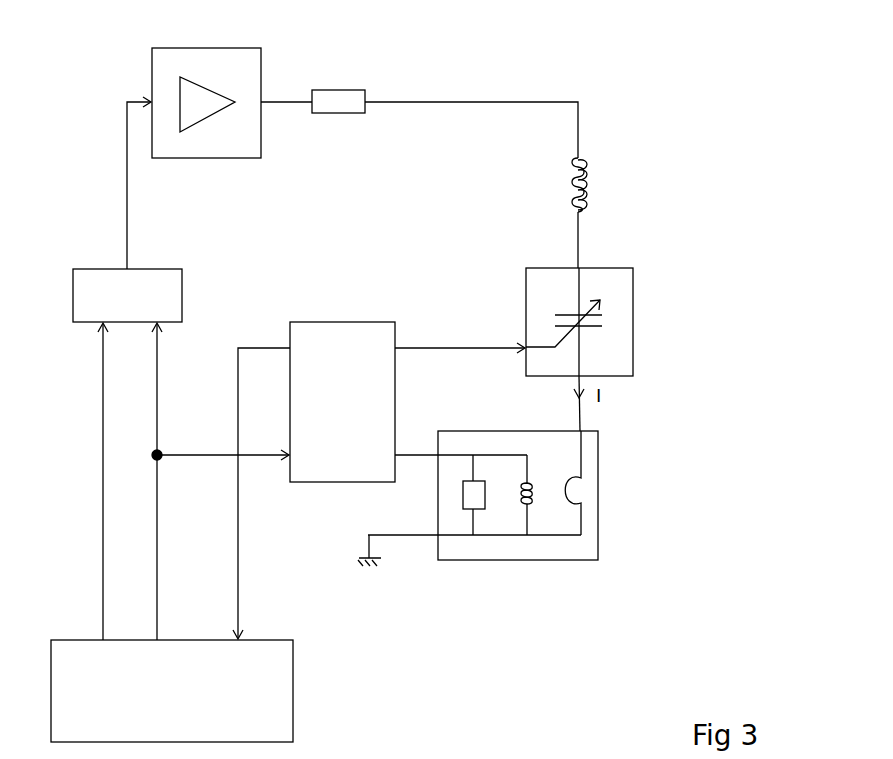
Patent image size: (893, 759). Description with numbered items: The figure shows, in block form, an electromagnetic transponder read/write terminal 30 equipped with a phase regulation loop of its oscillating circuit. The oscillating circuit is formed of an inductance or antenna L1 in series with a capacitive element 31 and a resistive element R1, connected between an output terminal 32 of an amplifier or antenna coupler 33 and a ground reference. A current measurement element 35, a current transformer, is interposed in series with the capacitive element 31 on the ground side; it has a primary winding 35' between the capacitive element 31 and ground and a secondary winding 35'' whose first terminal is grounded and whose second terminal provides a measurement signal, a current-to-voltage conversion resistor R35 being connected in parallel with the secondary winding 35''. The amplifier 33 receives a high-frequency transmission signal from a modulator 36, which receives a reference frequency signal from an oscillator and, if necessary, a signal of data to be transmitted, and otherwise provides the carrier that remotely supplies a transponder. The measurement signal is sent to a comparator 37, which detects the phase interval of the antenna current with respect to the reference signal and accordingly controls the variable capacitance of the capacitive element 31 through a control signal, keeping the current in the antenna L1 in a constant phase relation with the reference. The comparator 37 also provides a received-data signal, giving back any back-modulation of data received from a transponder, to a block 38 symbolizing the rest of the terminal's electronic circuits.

The terminal 30 is at (514, 612).
The capacitive element 31 is at (633, 330).
The output terminal 32 is at (282, 102).
The amplifier 33 is at (205, 48).
The current measurement element 35 is at (509, 493).
The primary winding 35' is at (608, 483).
The secondary winding 35'' is at (545, 484).
The modulator 36 is at (182, 293).
The comparator 37 is at (332, 322).
The block 38 is at (293, 700).
The resistive element R1 is at (338, 114).
The antenna L1 is at (595, 185).
The current-to-voltage conversion resistor R35 is at (463, 495).